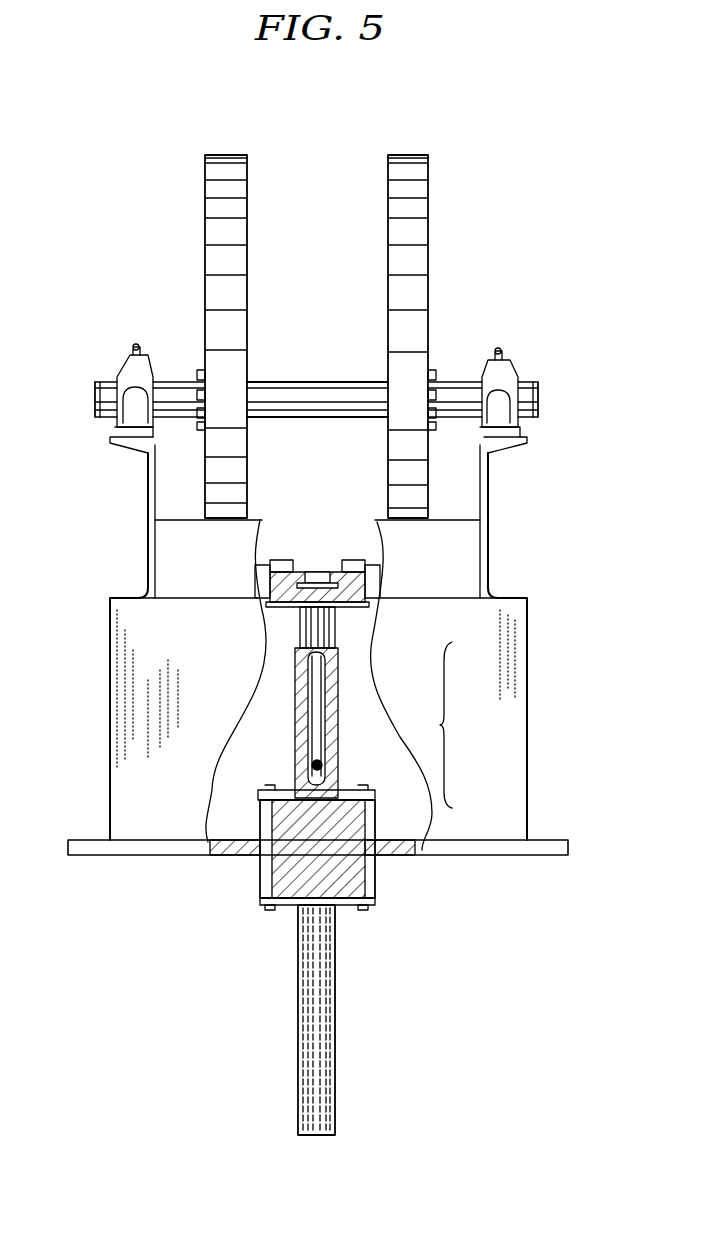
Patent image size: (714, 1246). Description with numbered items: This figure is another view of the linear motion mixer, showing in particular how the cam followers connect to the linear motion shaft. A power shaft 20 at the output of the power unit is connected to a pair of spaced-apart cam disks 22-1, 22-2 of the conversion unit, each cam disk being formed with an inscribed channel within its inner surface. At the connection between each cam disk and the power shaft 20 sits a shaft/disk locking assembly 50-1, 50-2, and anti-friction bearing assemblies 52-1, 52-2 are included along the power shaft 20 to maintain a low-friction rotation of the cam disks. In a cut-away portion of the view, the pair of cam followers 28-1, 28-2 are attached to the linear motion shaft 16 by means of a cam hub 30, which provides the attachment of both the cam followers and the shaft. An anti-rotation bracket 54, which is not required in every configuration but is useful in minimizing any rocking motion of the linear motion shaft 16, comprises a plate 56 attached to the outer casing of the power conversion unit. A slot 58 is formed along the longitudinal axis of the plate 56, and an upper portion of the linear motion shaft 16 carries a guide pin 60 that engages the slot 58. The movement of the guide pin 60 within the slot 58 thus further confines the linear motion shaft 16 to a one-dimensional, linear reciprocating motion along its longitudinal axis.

The linear motion shaft 16 is at (320, 1012).
The power shaft 20 is at (318, 382).
The cam disk 22-1 is at (411, 155).
The cam disk 22-2 is at (228, 155).
The cam follower 28-1 is at (380, 574).
The cam follower 28-2 is at (256, 574).
The cam hub 30 is at (283, 598).
The shaft/disk locking assembly 50-1 is at (448, 372).
The shaft/disk locking assembly 50-2 is at (190, 370).
The anti-friction bearing assembly 52-1 is at (538, 398).
The anti-friction bearing assembly 52-2 is at (117, 402).
The anti-rotation bracket 54 is at (487, 737).
The plate 56 is at (337, 790).
The slot 58 is at (300, 708).
The guide pin 60 is at (312, 765).